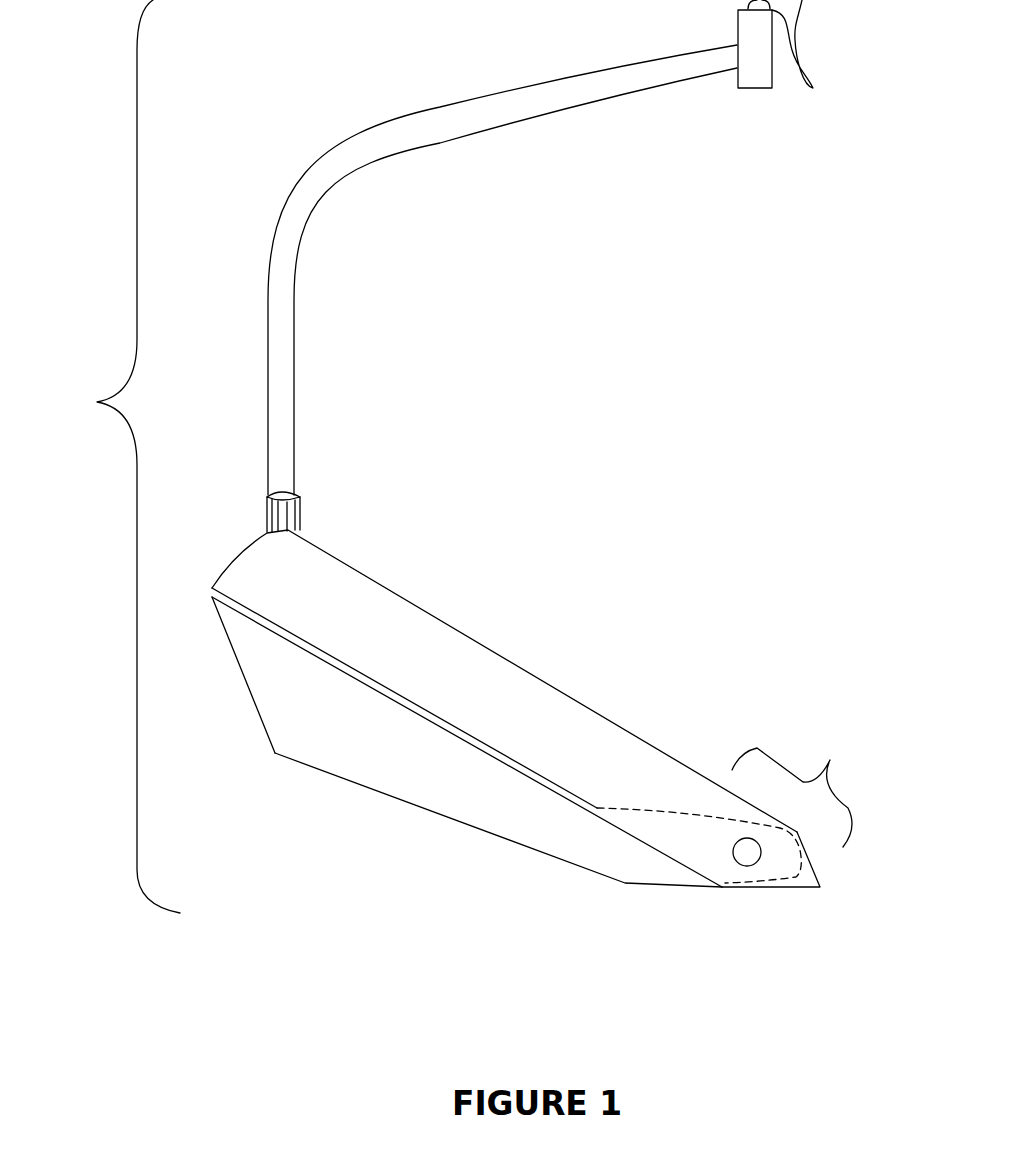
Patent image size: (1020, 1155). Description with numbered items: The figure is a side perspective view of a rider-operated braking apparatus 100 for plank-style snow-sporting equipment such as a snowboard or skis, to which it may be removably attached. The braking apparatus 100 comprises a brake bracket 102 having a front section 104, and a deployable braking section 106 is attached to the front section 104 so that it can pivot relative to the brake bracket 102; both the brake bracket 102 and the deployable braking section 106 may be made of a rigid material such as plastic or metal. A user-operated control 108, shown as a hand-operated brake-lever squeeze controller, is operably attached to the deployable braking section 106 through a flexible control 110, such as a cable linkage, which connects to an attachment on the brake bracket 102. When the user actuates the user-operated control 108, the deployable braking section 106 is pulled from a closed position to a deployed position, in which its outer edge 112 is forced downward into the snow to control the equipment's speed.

The braking apparatus 100 is at (101, 456).
The brake bracket 102 is at (540, 709).
The front section 104 is at (736, 802).
The deployable braking section 106 is at (465, 800).
The user-operated control 108 is at (760, 72).
The flexible control 110 is at (366, 186).
The outer edge 112 is at (296, 772).